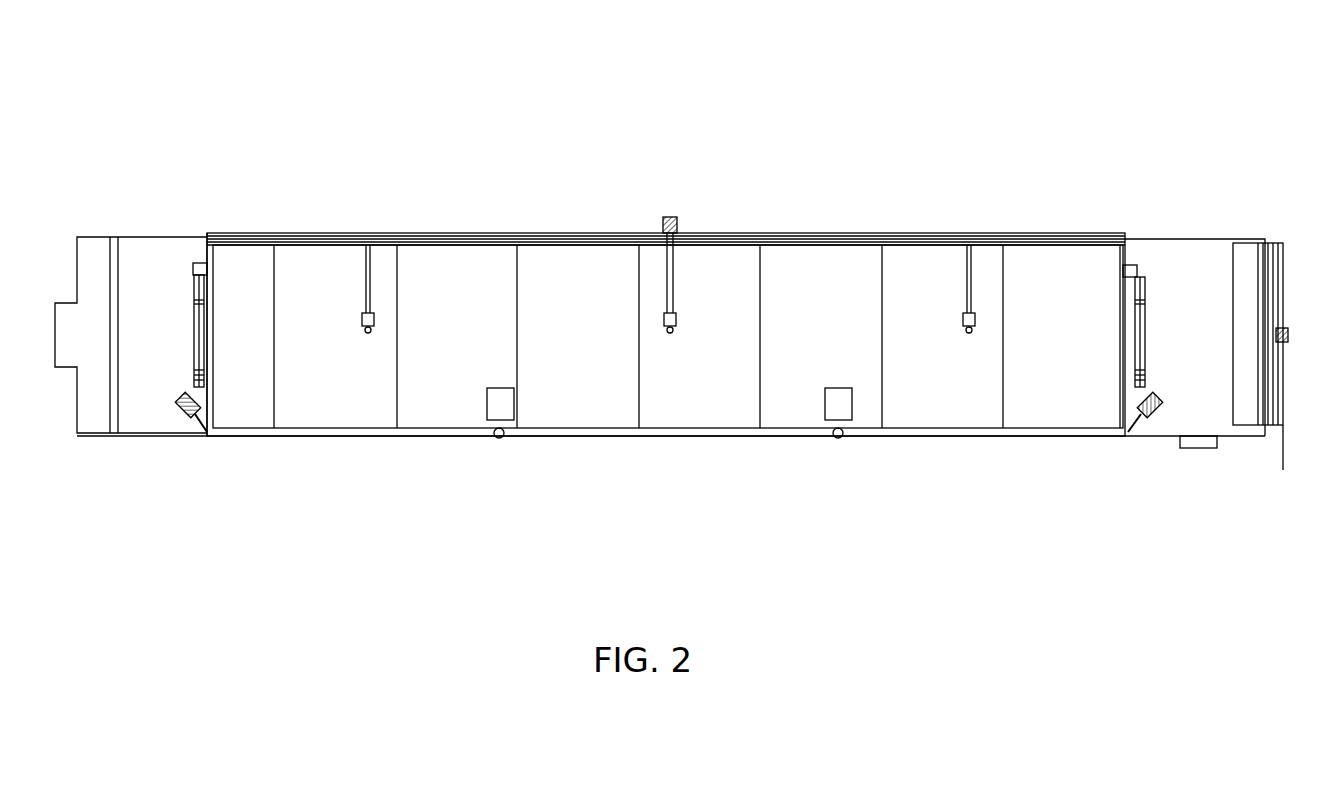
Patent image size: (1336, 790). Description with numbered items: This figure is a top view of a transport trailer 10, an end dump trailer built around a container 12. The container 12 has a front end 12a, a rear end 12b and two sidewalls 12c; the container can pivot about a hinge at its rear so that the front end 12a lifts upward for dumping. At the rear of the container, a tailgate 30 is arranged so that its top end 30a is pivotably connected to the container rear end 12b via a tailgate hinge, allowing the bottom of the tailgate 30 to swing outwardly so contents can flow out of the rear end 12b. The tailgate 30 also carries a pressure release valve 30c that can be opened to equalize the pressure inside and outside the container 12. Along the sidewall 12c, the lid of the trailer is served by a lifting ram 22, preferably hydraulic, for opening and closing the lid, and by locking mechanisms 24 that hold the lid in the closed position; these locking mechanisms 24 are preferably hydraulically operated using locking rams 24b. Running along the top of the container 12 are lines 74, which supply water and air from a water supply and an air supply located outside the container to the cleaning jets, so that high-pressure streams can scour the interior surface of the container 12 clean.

The transport trailer 10 is at (866, 104).
The container 12 is at (1162, 237).
The front end 12a is at (78, 425).
The rear end 12b is at (1252, 237).
The sidewall 12c is at (168, 237).
The lifting ram 22 is at (192, 333).
The locking mechanism 24 is at (494, 437).
The locking ram 24b is at (178, 422).
The tailgate 30 is at (1284, 458).
The top end 30a is at (1258, 334).
The pressure release valve 30c is at (1283, 425).
The lines 74 is at (373, 273).